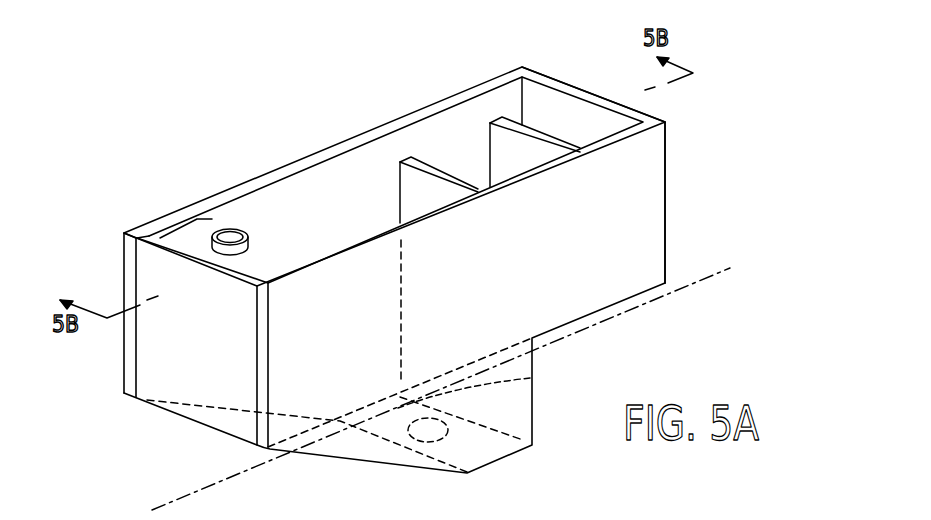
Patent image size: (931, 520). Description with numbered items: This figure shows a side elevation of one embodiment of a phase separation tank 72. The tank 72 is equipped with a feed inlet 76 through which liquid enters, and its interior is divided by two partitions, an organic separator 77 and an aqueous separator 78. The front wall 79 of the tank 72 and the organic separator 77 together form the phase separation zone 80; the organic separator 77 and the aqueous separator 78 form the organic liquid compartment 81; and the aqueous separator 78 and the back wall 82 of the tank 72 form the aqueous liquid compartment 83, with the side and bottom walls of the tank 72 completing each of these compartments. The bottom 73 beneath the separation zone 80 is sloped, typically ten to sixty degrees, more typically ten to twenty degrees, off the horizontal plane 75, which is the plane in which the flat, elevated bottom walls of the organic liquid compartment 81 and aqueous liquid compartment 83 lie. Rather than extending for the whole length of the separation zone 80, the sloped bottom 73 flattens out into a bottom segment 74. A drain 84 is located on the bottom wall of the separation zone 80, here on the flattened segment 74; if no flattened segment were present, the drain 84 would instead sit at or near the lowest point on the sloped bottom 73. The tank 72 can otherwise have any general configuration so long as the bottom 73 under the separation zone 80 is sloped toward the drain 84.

The phase separation tank 72 is at (702, 41).
The sloped bottom 73 is at (370, 463).
The bottom segment 74 is at (500, 462).
The horizontal plane 75 is at (698, 262).
The feed inlet 76 is at (230, 234).
The organic separator 77 is at (404, 160).
The aqueous separator 78 is at (493, 122).
The front wall 79 is at (163, 280).
The phase separation zone 80 is at (333, 190).
The organic liquid compartment 81 is at (460, 150).
The back wall 82 is at (593, 93).
The aqueous liquid compartment 83 is at (533, 103).
The drain 84 is at (532, 380).